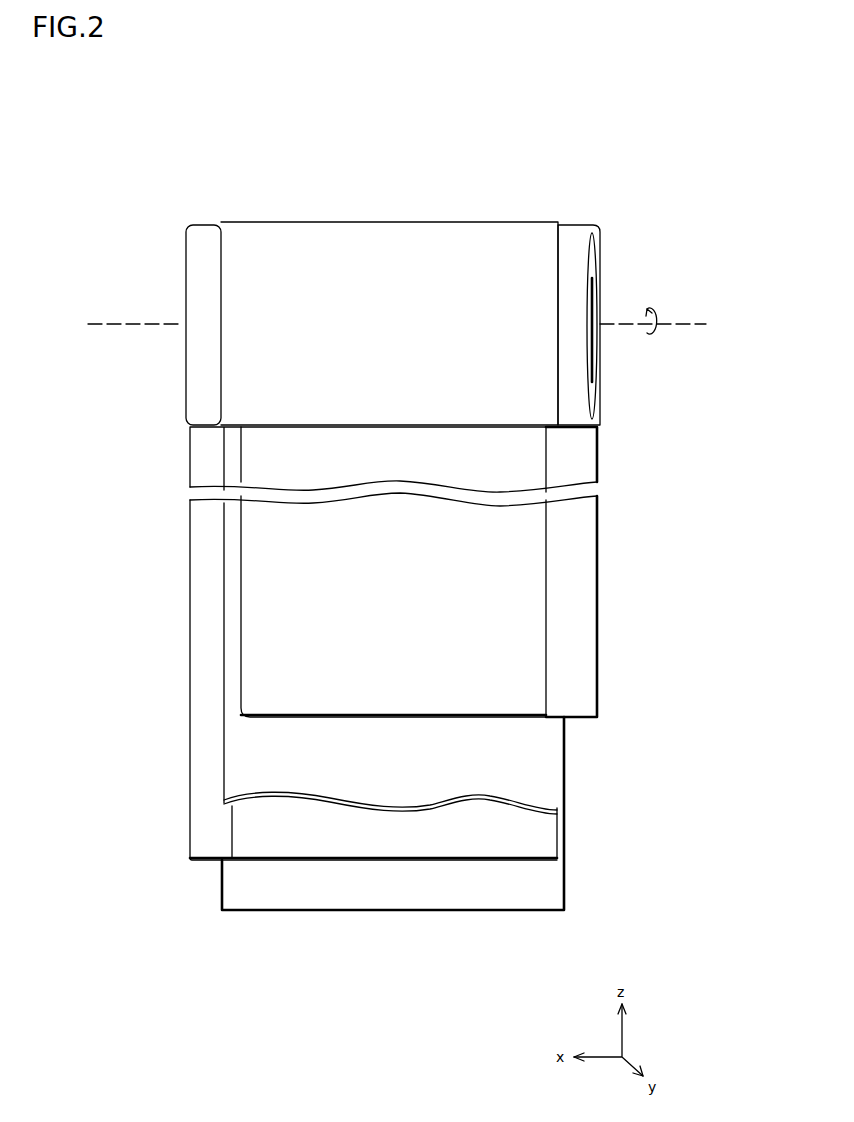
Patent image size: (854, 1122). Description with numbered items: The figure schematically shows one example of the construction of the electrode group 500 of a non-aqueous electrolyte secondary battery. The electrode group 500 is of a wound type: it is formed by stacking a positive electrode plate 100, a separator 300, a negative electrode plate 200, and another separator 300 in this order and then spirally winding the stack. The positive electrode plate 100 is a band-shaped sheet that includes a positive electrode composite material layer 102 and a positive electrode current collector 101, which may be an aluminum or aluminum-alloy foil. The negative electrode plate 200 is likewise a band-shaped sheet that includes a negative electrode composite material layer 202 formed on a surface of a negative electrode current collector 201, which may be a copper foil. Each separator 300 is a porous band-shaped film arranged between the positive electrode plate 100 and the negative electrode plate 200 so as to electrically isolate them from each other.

The electrode group 500 is at (164, 174).
The positive electrode plate 100 is at (708, 581).
The positive electrode current collector 101 is at (582, 600).
The positive electrode composite material layer 102 is at (540, 551).
The negative electrode plate 200 is at (64, 705).
The negative electrode current collector 201 is at (190, 758).
The negative electrode composite material layer 202 is at (270, 841).
The separator 300 is at (222, 898).